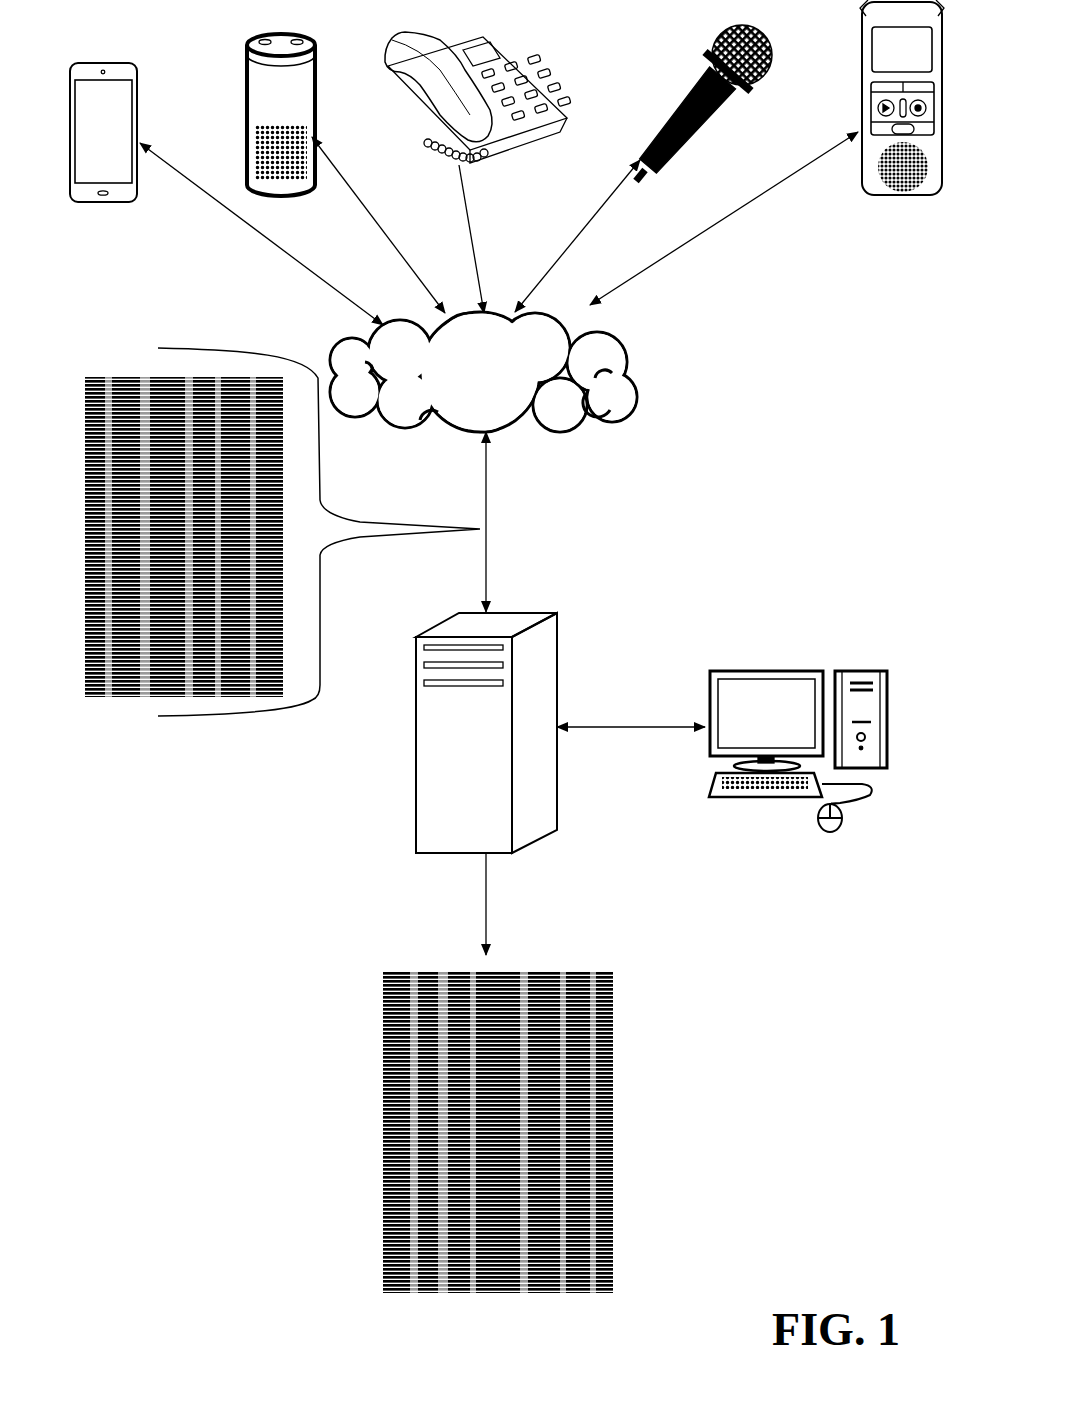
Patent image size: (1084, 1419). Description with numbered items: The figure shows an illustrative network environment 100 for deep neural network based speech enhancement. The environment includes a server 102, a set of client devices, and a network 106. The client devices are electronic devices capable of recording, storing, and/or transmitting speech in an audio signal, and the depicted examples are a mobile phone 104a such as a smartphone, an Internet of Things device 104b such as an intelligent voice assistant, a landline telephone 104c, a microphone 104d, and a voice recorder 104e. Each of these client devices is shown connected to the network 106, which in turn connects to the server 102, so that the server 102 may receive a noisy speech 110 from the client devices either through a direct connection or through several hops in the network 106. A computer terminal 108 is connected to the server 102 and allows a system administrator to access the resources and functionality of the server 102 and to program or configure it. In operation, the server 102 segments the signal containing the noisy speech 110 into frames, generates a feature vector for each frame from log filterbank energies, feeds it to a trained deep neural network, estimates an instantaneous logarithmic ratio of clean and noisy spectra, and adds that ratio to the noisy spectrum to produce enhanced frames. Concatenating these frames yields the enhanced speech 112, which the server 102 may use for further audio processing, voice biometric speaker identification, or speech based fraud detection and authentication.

The network environment 100 is at (855, 1298).
The server 102 is at (487, 772).
The mobile phone 104a is at (125, 252).
The Internet of Things (IoT) device 104b is at (343, 241).
The landline telephone 104c is at (548, 192).
The microphone 104d is at (745, 180).
The voice recorder 104e is at (926, 237).
The network 106 is at (483, 372).
The computer terminal 108 is at (785, 847).
The noisy speech 110 is at (201, 789).
The enhanced speech 112 is at (500, 1371).